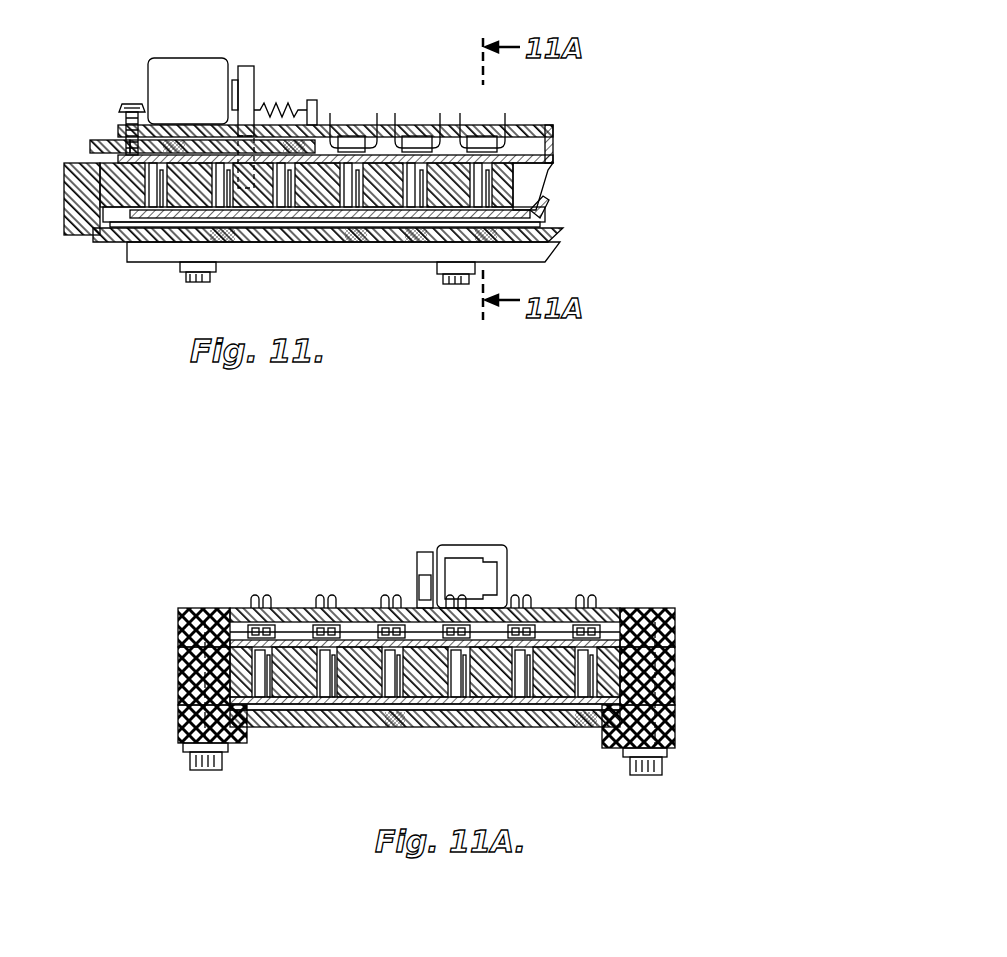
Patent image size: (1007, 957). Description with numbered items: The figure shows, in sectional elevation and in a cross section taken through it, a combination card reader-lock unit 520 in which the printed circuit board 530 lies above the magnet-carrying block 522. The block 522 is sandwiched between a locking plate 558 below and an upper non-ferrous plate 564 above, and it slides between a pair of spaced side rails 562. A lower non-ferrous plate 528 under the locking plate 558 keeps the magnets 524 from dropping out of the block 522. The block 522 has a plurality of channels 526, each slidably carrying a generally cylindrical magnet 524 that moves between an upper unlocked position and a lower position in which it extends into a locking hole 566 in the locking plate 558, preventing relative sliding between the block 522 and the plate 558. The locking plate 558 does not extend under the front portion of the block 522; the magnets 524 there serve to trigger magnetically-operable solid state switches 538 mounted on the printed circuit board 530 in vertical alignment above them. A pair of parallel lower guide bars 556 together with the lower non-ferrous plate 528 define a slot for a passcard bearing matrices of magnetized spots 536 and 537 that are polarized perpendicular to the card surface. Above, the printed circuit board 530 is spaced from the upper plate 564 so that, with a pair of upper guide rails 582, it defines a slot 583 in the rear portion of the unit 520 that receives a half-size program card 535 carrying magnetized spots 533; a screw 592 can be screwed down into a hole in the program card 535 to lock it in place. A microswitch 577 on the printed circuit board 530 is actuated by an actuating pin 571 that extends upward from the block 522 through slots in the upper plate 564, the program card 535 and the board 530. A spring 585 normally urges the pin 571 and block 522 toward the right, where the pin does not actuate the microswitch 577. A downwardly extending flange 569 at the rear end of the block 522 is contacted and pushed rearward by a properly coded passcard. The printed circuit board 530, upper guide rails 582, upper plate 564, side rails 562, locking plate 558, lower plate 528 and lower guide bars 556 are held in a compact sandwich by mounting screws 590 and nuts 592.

In FIG. 11, the lock-reader unit 520 is at (52, 165).
In FIG. 11A, the lock-reader unit 520 is at (183, 578).
In FIG. 11, the magnet-carrying block 522 is at (92, 177).
In FIG. 11A, the magnet-carrying block 522 is at (385, 672).
In FIG. 11, the magnet 524 is at (155, 182).
In FIG. 11A, the magnet 524 is at (520, 685).
In FIG. 11, the channel 526 is at (440, 160).
In FIG. 11A, the channel 526 is at (397, 655).
In FIG. 11, the lower non-ferrous plate 528 is at (548, 212).
In FIG. 11A, the lower non-ferrous plate 528 is at (672, 702).
In FIG. 11, the printed circuit board 530 is at (532, 130).
In FIG. 11A, the printed circuit board 530 is at (605, 612).
In FIG. 11, the magnetized spots 533 is at (304, 143).
In FIG. 11, the program card 535 is at (95, 148).
In FIG. 11, the magnetized spots 536 is at (230, 243).
In FIG. 11, the magnetized spots 537 is at (473, 232).
In FIG. 11A, the magnetized spots 537 is at (393, 720).
In FIG. 11, the magnetically-operable solid state switch 538 is at (412, 140).
In FIG. 11A, the magnetically-operable solid state switch 538 is at (315, 632).
In FIG. 11, the lower guide bar 556 is at (540, 255).
In FIG. 11A, the lower guide bar 556 is at (183, 725).
In FIG. 11, the locking plate 558 is at (123, 220).
In FIG. 11A, the locking plate 558 is at (545, 702).
In FIG. 11, the side bar or rail 562 is at (537, 174).
In FIG. 11A, the side bar or rail 562 is at (185, 682).
In FIG. 11, the upper non-ferrous plate 564 is at (553, 157).
In FIG. 11A, the upper non-ferrous plate 564 is at (672, 645).
In FIG. 11, the locking hole 566 is at (167, 218).
In FIG. 11, the flange 569 is at (100, 234).
In FIG. 11, the actuating pin 571 is at (247, 66).
In FIG. 11A, the actuating pin 571 is at (430, 553).
In FIG. 11, the microswitch 577 is at (153, 60).
In FIG. 11A, the microswitch 577 is at (452, 545).
In FIG. 11A, the upper guide rail 582 is at (178, 634).
In FIG. 11, the slot 583 is at (190, 140).
In FIG. 11, the spring 585 is at (272, 107).
In FIG. 11A, the mounting screw 590 is at (205, 771).
In FIG. 11, the nut 592 is at (130, 106).
In FIG. 11A, the nut 592 is at (232, 757).